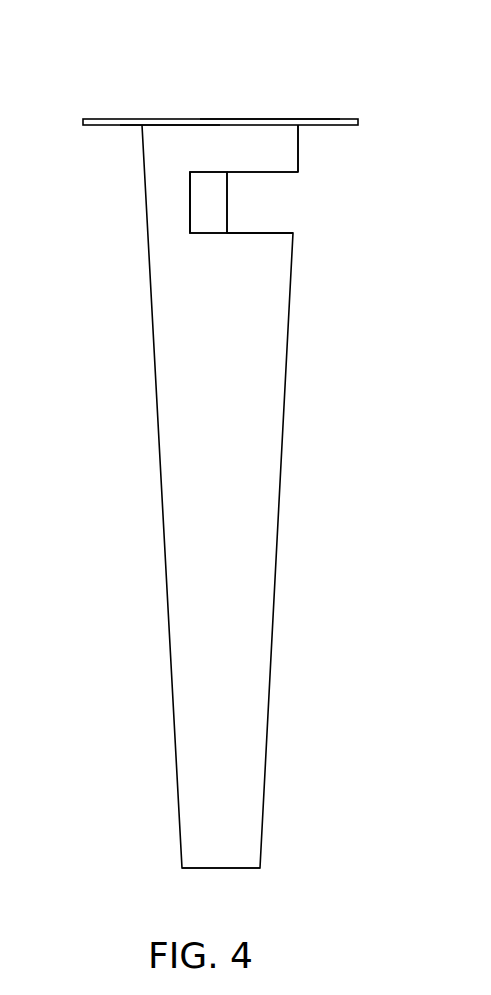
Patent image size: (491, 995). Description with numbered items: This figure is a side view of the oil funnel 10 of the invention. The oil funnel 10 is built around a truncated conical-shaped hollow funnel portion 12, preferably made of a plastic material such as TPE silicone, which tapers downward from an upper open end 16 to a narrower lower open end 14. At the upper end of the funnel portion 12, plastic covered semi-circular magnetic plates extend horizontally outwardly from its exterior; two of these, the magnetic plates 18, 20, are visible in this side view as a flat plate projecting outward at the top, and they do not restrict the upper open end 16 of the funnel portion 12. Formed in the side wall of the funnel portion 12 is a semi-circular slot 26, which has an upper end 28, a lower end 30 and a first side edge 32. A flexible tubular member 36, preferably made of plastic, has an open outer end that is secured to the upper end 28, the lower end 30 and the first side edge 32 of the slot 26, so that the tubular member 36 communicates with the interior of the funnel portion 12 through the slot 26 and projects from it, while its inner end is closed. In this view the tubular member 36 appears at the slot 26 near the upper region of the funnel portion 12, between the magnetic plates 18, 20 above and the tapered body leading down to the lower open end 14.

The oil funnel 10 is at (373, 97).
The funnel portion 12 is at (165, 438).
The lower open end 14 is at (235, 875).
The upper open end 16 is at (165, 123).
The magnetic plate 18 is at (275, 118).
The magnetic plate 20 is at (110, 118).
The slot 26 is at (272, 230).
The upper end of slot 28 is at (277, 172).
The lower end of slot 30 is at (245, 233).
The first side edge of slot 32 is at (190, 218).
The flexible tubular member 36 is at (201, 192).